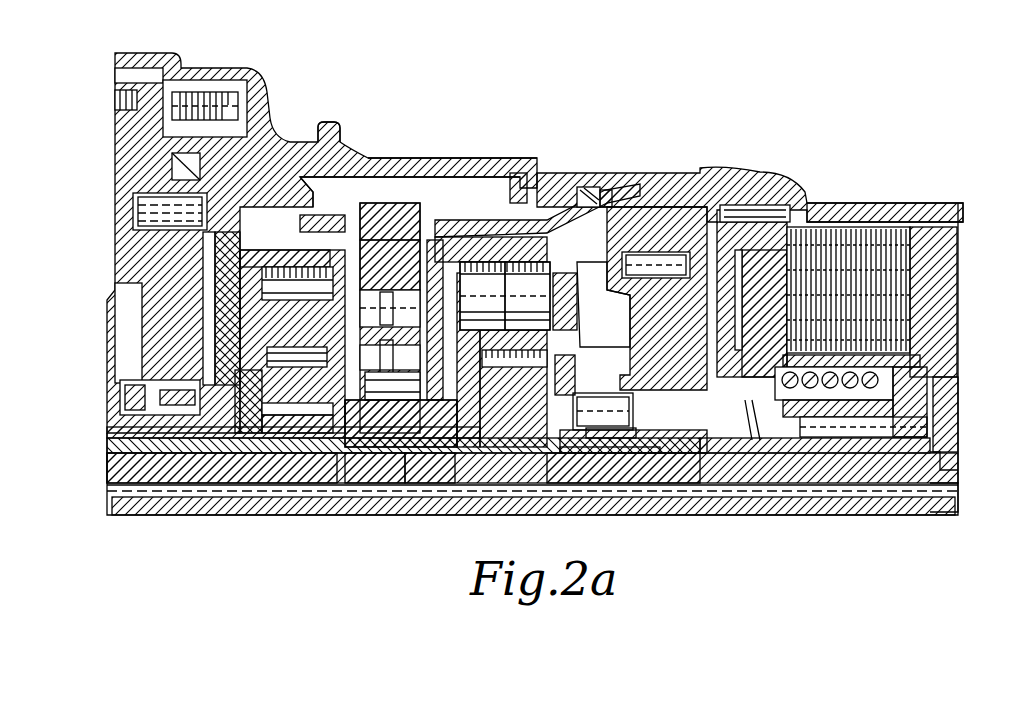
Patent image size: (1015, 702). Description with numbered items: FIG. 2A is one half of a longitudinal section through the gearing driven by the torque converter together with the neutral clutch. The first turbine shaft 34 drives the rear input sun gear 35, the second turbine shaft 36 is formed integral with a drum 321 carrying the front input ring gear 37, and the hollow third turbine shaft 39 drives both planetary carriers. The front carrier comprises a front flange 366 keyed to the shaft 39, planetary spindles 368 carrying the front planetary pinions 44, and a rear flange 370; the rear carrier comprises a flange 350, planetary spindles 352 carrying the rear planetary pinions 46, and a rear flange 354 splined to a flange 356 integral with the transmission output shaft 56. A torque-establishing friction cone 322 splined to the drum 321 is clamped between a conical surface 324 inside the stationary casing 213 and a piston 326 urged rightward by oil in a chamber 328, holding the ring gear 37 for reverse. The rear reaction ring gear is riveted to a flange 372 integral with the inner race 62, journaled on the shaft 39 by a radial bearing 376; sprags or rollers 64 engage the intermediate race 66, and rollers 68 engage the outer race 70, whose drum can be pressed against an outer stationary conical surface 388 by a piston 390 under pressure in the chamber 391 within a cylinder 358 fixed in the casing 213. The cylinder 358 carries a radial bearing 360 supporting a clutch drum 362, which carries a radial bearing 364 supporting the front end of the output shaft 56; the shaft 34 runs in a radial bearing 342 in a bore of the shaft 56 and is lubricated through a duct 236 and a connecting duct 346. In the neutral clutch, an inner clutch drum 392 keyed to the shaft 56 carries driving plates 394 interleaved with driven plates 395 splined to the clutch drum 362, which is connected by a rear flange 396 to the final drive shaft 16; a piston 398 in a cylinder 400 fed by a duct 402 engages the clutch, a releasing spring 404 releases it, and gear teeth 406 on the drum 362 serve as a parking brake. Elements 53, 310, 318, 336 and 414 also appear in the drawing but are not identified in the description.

The final drive shaft 16 is at (948, 422).
The shaft 34 is at (120, 500).
The rear input sun gear 35 is at (507, 447).
The second turbine shaft 36 is at (118, 430).
The front input ring gear 37 is at (285, 279).
The third turbine shaft 39 is at (113, 468).
The front planetary pinions 44 is at (297, 288).
The rear planetary pinions 46 is at (527, 296).
The gear 53 is at (482, 296).
The transmission output shaft 56 is at (945, 477).
The inner race 62 is at (375, 468).
The one-way sprags or rollers 64 is at (392, 386).
The intermediate race 66 is at (378, 375).
The spindles or rollers 68 is at (406, 293).
The outer race 70 is at (400, 205).
The stationary casing 213 is at (458, 160).
The duct 236 is at (160, 505).
The ring 310 is at (115, 445).
The bearing 318 is at (135, 393).
The drum 321 is at (300, 230).
The torque-establishing friction cone 322 is at (368, 160).
The conical surface 324 is at (265, 148).
The piston 326 is at (340, 130).
The chamber 328 is at (189, 206).
The arm 336 is at (503, 226).
The radial bearing 342 is at (577, 453).
The connecting duct 346 is at (540, 452).
The flange 350 is at (465, 447).
The planetary spindles 352 is at (580, 285).
The rear flange 354 is at (603, 304).
The flange 356 is at (596, 350).
The cylinder 358 is at (725, 178).
The radial bearing 360 is at (612, 432).
The clutch drum 362 is at (782, 208).
The radial bearing 364 is at (603, 438).
The front flange 366 is at (255, 440).
The planetary spindles 368 is at (390, 265).
The rear flange 370 is at (390, 224).
The flange 372 is at (470, 370).
The radial bearing 376 is at (418, 440).
The outer stationary conical surface 388 is at (522, 195).
The piston 390 is at (602, 196).
The pressure chamber 391 is at (640, 205).
The inner clutch drum 392 is at (918, 388).
The driving plates 394 is at (920, 360).
The driven plates 395 is at (884, 226).
The rear flange 396 is at (938, 295).
The piston 398 is at (740, 290).
The cylinder 400 is at (657, 298).
The duct 402 is at (752, 440).
The releasing spring 404 is at (815, 456).
The gear teeth 406 is at (797, 180).
The step 414 is at (948, 462).